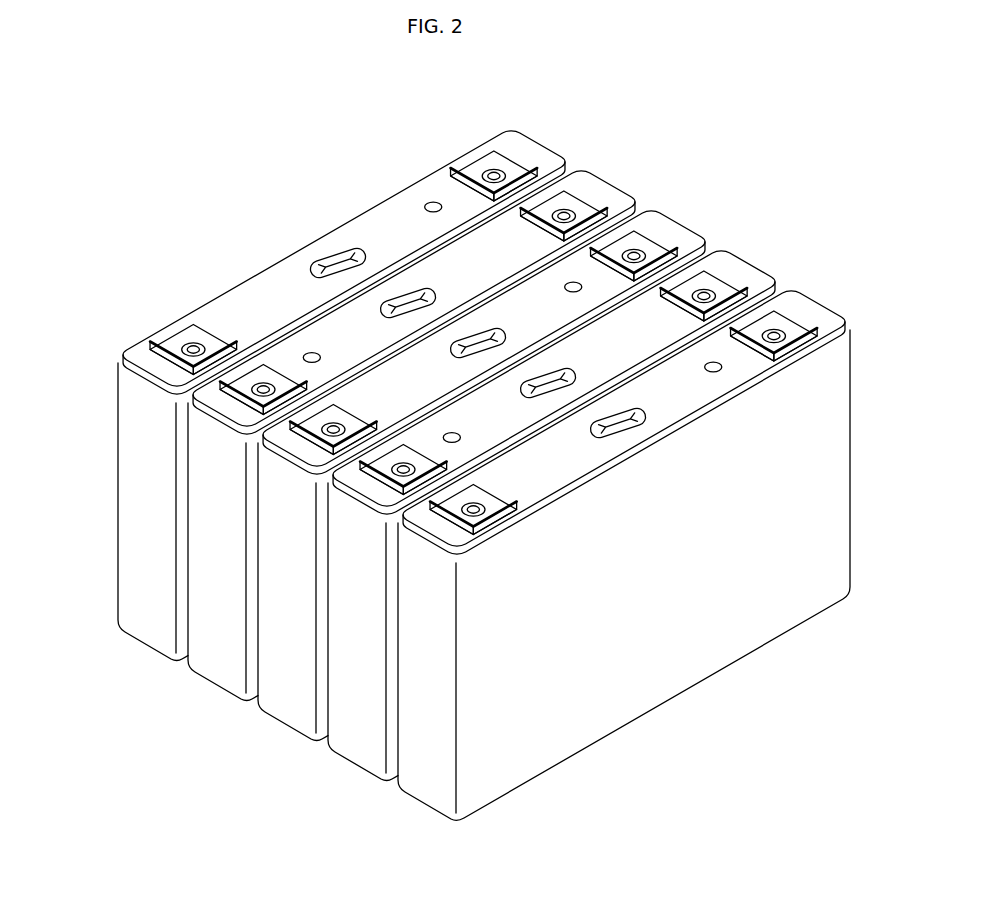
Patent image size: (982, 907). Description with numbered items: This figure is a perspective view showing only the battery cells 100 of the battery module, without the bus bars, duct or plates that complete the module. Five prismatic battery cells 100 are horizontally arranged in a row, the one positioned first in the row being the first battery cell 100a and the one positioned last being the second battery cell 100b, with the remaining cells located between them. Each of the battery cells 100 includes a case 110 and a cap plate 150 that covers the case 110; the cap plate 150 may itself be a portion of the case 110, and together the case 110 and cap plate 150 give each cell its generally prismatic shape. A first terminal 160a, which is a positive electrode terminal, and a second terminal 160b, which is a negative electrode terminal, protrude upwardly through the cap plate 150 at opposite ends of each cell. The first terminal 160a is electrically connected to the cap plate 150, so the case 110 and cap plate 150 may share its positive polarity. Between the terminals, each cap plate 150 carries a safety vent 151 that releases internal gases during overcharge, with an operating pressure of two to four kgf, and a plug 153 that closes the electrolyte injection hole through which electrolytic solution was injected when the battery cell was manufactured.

The battery cells 100 is at (453, 504).
The first battery cell 100a is at (619, 561).
The second battery cell 100b is at (310, 422).
The case 110 is at (133, 487).
The cap plate 150 is at (627, 416).
The safety vent 151 is at (333, 257).
The plug 153 is at (722, 371).
The first terminal 160a is at (795, 313).
The second terminal 160b is at (485, 505).